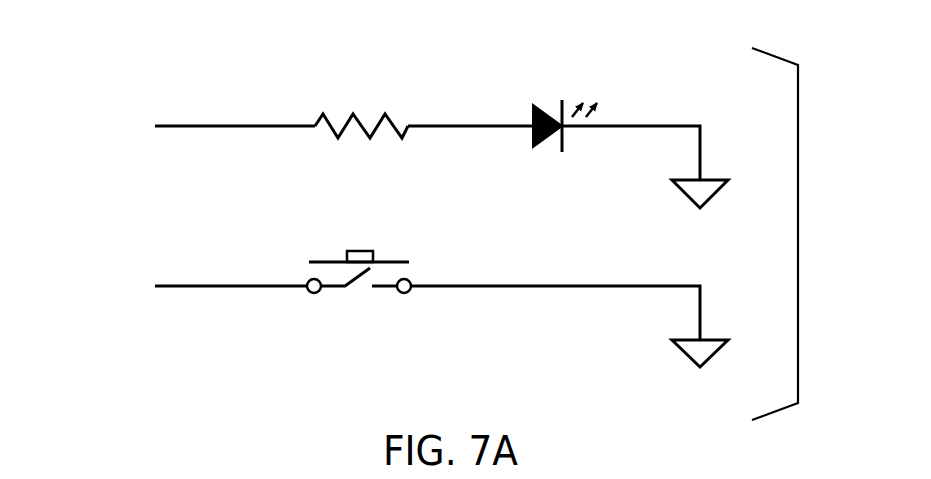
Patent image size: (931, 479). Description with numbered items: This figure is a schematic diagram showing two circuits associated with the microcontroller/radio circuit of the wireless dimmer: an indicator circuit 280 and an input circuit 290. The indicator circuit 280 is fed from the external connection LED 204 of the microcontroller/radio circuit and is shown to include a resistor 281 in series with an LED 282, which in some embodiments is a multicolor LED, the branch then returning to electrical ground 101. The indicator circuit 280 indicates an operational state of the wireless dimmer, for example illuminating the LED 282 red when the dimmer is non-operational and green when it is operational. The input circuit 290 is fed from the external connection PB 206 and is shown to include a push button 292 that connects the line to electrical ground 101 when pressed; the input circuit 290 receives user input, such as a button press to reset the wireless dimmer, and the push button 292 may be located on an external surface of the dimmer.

The indicator circuit 280 is at (155, 56).
The LED 204 is at (150, 107).
The resistor 281 is at (345, 113).
The LED 282 is at (530, 112).
The electrical ground 101 is at (714, 180).
The input circuit 290 is at (155, 216).
The PB 206 is at (153, 266).
The push button 292 is at (384, 262).